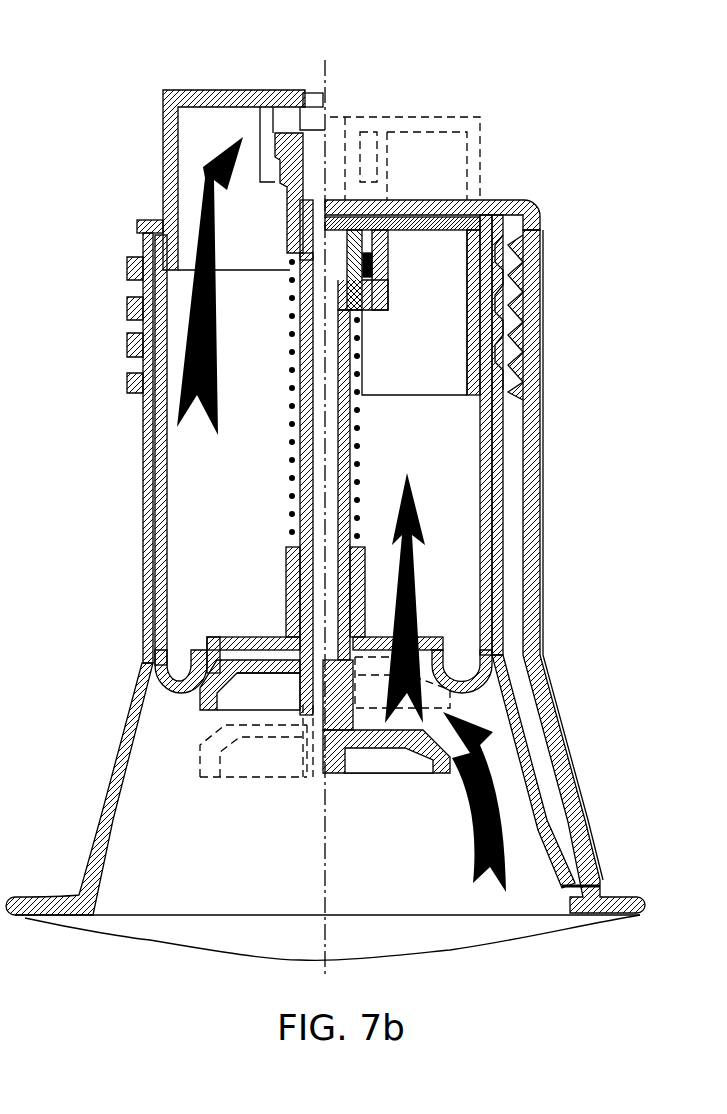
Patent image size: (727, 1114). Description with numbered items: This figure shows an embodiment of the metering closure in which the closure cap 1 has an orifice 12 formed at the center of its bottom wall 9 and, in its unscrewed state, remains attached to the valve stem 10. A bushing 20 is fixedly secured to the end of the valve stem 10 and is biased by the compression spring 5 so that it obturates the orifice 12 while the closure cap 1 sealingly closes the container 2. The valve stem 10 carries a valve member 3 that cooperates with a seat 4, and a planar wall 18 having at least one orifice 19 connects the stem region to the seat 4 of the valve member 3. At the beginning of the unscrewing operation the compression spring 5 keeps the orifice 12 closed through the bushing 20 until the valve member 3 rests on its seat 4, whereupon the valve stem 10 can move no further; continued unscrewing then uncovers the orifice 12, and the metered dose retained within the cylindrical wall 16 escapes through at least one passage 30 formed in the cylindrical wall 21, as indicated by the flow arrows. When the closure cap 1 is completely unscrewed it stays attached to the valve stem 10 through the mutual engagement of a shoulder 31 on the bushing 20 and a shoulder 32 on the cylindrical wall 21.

The closure cap 1 is at (530, 400).
The bottle neck 2 is at (150, 498).
The valve member 3 is at (200, 703).
The seat 4 is at (160, 680).
The compression spring 5 is at (365, 450).
The bottom wall 9 is at (283, 90).
The valve stem 10 is at (300, 463).
The orifice 12 is at (313, 100).
The cylindrical wall 16 is at (495, 490).
The planar wall 18 is at (235, 640).
The orifice 19 is at (425, 645).
The bushing 20 is at (288, 228).
The cylindrical wall 21 is at (390, 277).
The passage 30 is at (263, 137).
The shoulder 31 is at (380, 205).
The shoulder 32 is at (390, 287).